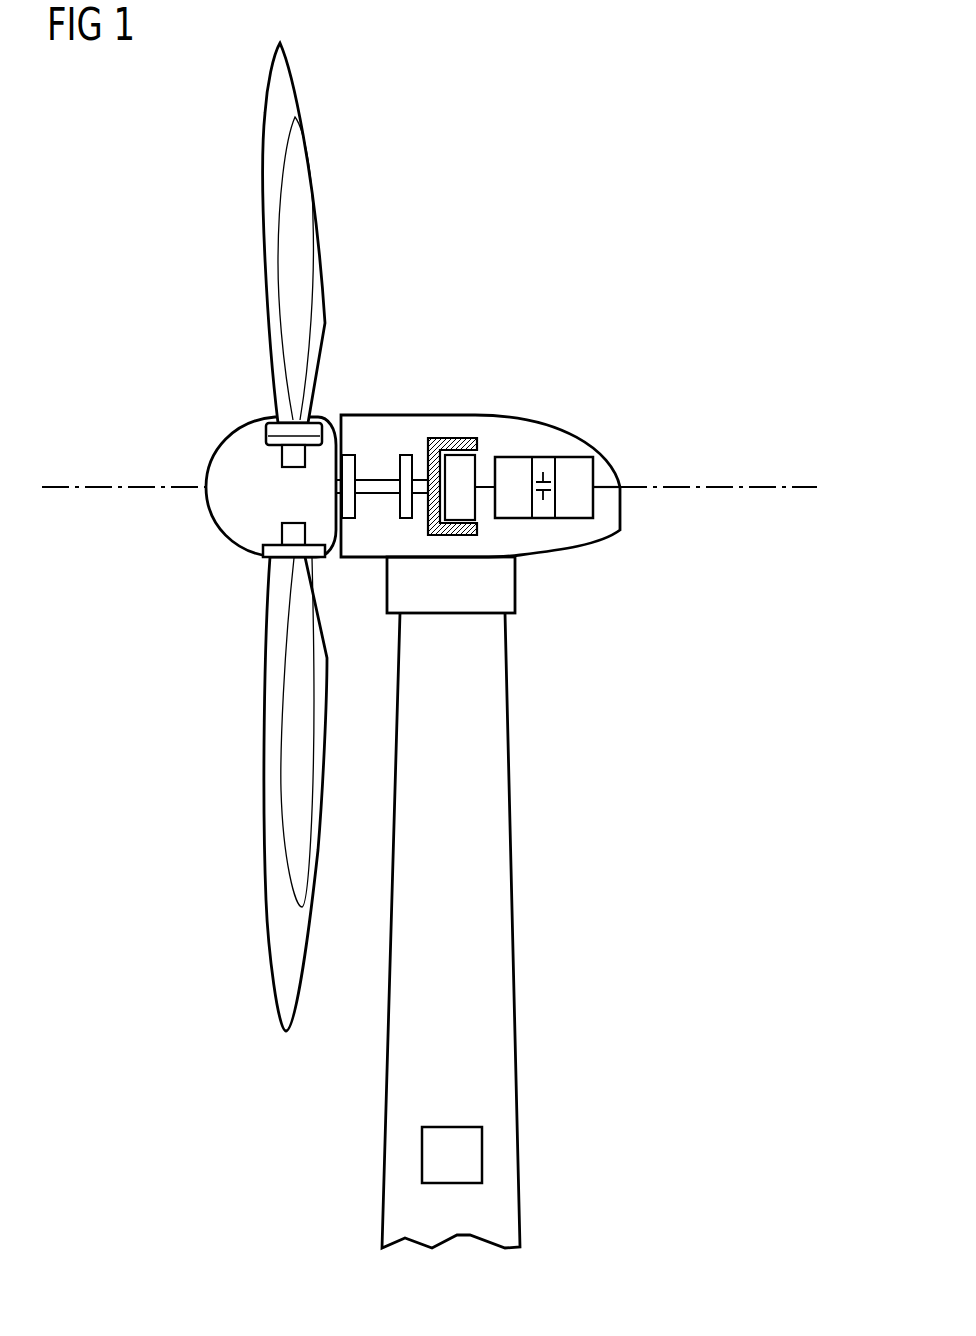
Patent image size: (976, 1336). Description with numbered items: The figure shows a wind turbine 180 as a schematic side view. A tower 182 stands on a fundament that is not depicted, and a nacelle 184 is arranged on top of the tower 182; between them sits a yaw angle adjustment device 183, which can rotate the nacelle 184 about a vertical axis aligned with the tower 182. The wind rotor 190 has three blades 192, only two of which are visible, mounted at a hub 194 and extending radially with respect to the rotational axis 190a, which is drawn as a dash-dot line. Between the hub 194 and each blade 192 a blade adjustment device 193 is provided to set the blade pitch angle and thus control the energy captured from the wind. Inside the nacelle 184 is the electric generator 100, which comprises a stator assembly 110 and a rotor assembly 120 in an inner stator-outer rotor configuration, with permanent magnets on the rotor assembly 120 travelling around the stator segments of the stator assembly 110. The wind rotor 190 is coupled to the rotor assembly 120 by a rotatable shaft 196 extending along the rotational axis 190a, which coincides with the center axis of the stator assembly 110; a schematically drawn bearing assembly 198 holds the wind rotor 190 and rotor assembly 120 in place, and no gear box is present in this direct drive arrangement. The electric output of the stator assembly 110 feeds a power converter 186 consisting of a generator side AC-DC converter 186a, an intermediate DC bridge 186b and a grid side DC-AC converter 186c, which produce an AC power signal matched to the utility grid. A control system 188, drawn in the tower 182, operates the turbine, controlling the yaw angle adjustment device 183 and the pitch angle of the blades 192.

The wind turbine 180 is at (702, 253).
The wind rotor 190 is at (166, 382).
The rotational axis 190a is at (62, 485).
The blades 192 is at (270, 220).
The blade adjustment device 193 is at (273, 418).
The hub 194 is at (222, 508).
The electric generator 100 is at (436, 395).
The rotatable shaft 196 is at (388, 488).
The bearing assembly 198 is at (405, 455).
The rotor assembly 120 is at (458, 440).
The stator assembly 110 is at (470, 462).
The power converter 186 is at (562, 435).
The generator side AC-DC converter 186a is at (513, 518).
The intermediate DC bridge 186b is at (540, 518).
The grid side DC-AC converter 186c is at (575, 518).
The nacelle 184 is at (620, 513).
The yaw angle adjustment device 183 is at (390, 585).
The tower 182 is at (508, 770).
The control system 188 is at (448, 1125).